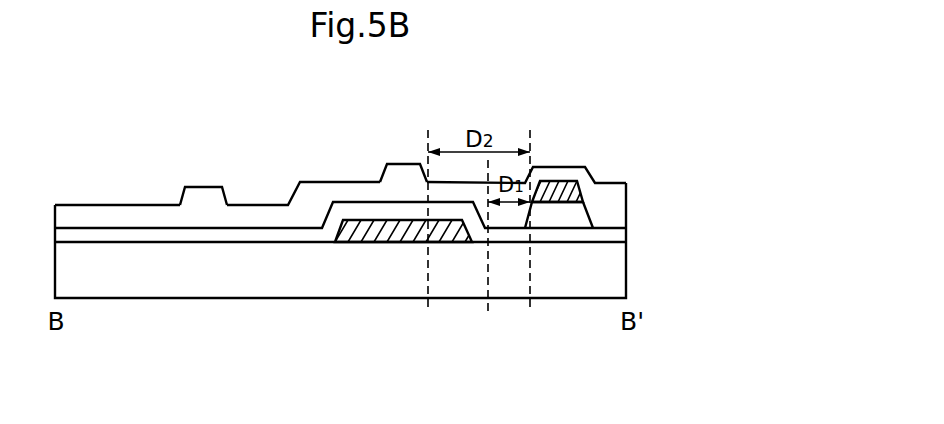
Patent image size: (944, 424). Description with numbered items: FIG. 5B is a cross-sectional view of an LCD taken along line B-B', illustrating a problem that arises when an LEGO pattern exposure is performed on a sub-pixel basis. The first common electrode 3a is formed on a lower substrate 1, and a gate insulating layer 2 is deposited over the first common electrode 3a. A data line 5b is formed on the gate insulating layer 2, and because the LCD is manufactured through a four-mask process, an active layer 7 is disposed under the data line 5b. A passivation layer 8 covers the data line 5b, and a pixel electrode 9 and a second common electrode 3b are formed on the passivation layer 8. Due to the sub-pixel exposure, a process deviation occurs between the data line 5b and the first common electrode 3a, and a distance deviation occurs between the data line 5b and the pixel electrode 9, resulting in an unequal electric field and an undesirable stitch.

The lower substrate 1 is at (626, 271).
The gate insulating layer 2 is at (626, 234).
The first common electrode 3a is at (362, 222).
The second common electrode 3b is at (205, 190).
The data line 5b is at (552, 183).
The active layer 7 is at (580, 216).
The passivation layer 8 is at (626, 197).
The pixel electrode 9 is at (402, 170).